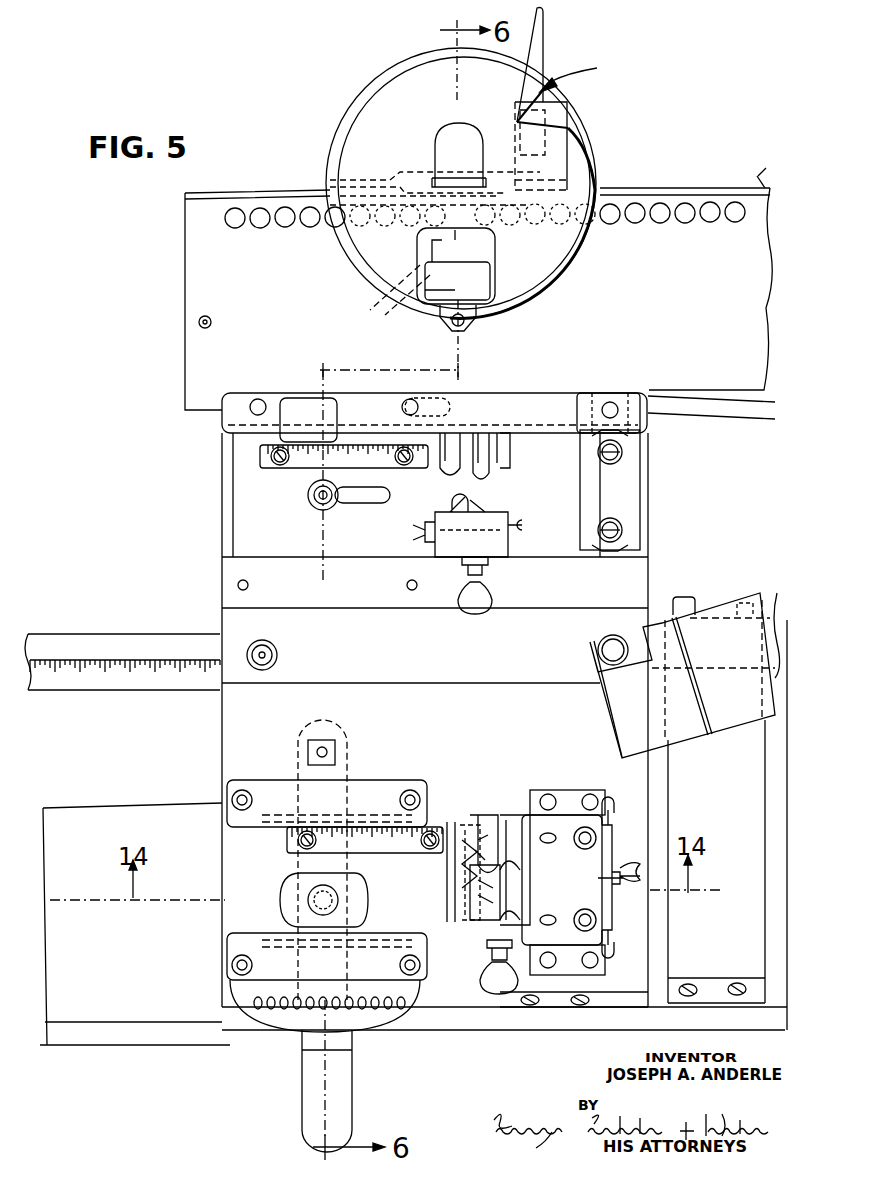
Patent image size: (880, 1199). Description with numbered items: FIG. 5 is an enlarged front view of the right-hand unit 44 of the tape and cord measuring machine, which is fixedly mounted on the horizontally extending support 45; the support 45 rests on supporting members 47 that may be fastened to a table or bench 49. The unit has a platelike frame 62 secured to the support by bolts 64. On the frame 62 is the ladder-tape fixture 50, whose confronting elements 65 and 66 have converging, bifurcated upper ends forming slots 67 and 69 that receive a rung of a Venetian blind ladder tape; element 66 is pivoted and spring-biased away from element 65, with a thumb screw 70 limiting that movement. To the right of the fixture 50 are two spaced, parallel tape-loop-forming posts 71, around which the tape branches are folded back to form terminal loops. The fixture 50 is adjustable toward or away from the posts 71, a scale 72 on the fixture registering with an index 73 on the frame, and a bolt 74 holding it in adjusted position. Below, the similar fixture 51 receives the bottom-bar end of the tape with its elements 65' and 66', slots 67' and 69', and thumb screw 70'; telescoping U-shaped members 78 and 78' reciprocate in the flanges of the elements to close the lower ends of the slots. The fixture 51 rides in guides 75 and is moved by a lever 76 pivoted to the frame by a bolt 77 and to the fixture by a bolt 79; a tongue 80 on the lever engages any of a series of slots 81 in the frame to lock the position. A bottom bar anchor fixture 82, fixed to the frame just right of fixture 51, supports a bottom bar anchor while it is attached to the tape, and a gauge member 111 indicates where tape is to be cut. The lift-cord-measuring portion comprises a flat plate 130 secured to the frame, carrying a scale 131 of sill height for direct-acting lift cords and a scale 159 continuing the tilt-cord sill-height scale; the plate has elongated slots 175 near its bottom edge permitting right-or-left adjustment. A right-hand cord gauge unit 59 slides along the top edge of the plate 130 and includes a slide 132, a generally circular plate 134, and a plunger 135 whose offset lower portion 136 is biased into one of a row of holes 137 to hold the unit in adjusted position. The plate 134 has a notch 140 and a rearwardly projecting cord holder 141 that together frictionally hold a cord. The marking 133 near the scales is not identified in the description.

The plate 130 is at (201, 210).
The scale 131 is at (728, 270).
The slide 132 is at (467, 360).
The indicia 133 is at (730, 300).
The circular plate 134 is at (418, 91).
The plunger or detent 135 is at (452, 136).
The offset lower portion 136 is at (442, 235).
The row of holes 137 is at (730, 188).
The notch 140 is at (568, 118).
The cord holder 141 is at (540, 35).
The scale 159 is at (218, 344).
The elongated slots 175 is at (710, 417).
The right-hand unit 44 is at (215, 515).
The support 45 is at (50, 636).
The supporting members 47 is at (729, 801).
The table or bench 49 is at (158, 1010).
The ladder-tape fixture 50 is at (488, 497).
The fixture 51 is at (468, 883).
The right-hand cord gauge unit 59 is at (582, 71).
The platelike frame 62 is at (374, 596).
The bolts 64 is at (274, 655).
The element 65 is at (492, 458).
The element 65' is at (478, 826).
The element 66 is at (455, 495).
The element 66' is at (465, 919).
The slot 67 is at (476, 435).
The slot 67' is at (518, 851).
The slot 69 is at (493, 573).
The slot 69' is at (488, 956).
The thumb screw 70 is at (485, 608).
The thumb screw 70' is at (486, 983).
The tape-loop-forming posts 71 is at (633, 520).
The scale 72 is at (294, 470).
The index 73 is at (290, 410).
The bolt 74 is at (327, 500).
The guides 75 is at (230, 820).
The lever 76 is at (338, 1112).
The bolt 77 is at (328, 754).
The U-shaped member 78 is at (433, 872).
The U-shaped member 78' is at (431, 905).
The bolt 79 is at (324, 894).
The tongue 80 is at (316, 1013).
The series of slots 81 is at (279, 1008).
The bottom bar anchor fixture 82 is at (617, 832).
The gauge member 111 is at (614, 715).